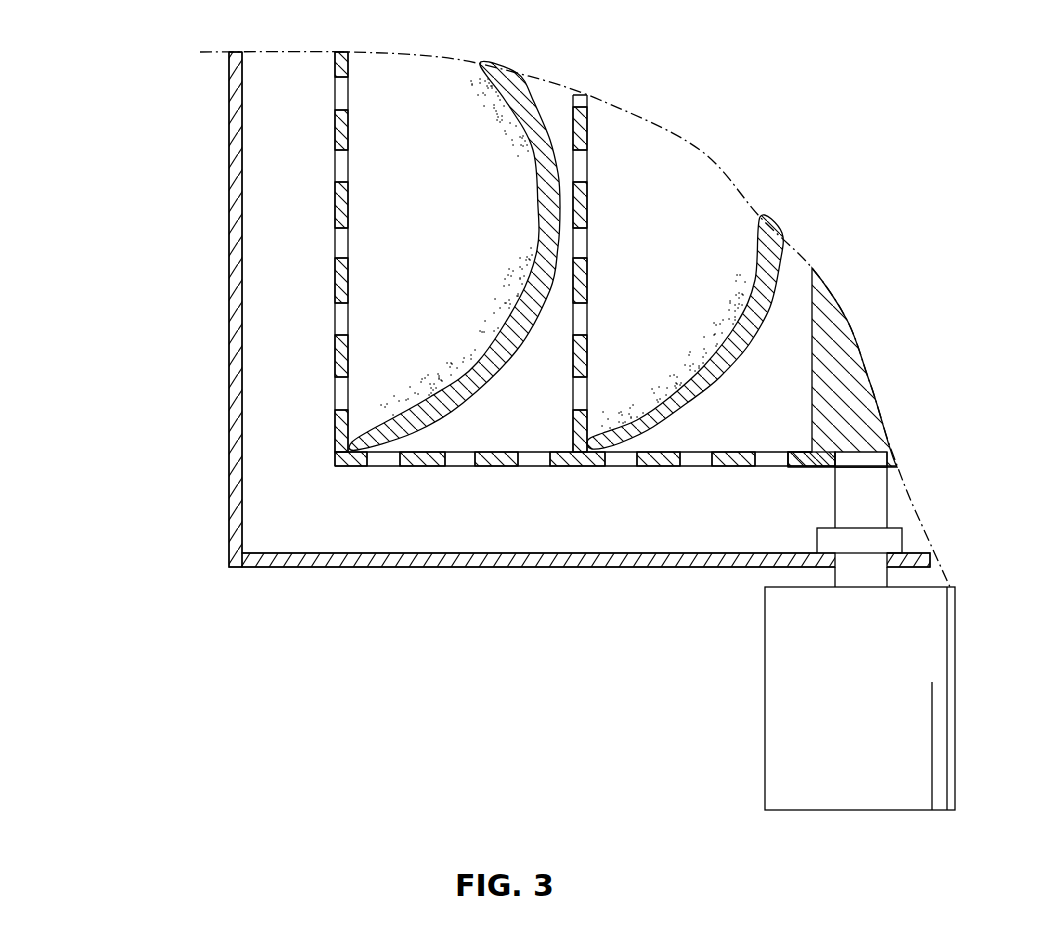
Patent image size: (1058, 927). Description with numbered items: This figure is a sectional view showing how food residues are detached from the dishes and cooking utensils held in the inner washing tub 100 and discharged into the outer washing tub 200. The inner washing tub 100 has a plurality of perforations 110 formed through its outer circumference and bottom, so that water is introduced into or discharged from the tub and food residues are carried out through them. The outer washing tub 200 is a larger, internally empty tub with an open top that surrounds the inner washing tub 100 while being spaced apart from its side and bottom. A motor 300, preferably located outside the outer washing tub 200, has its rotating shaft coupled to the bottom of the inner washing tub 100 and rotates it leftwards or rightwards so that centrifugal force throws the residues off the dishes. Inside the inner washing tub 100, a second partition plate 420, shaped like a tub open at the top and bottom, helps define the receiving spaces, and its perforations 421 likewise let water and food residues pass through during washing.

The inner washing tub 100 is at (507, 370).
The perforations 110 is at (340, 241).
The outer washing tub 200 is at (231, 276).
The motor 300 is at (790, 703).
The second partition plate 420 is at (558, 127).
The perforations 421 is at (583, 167).